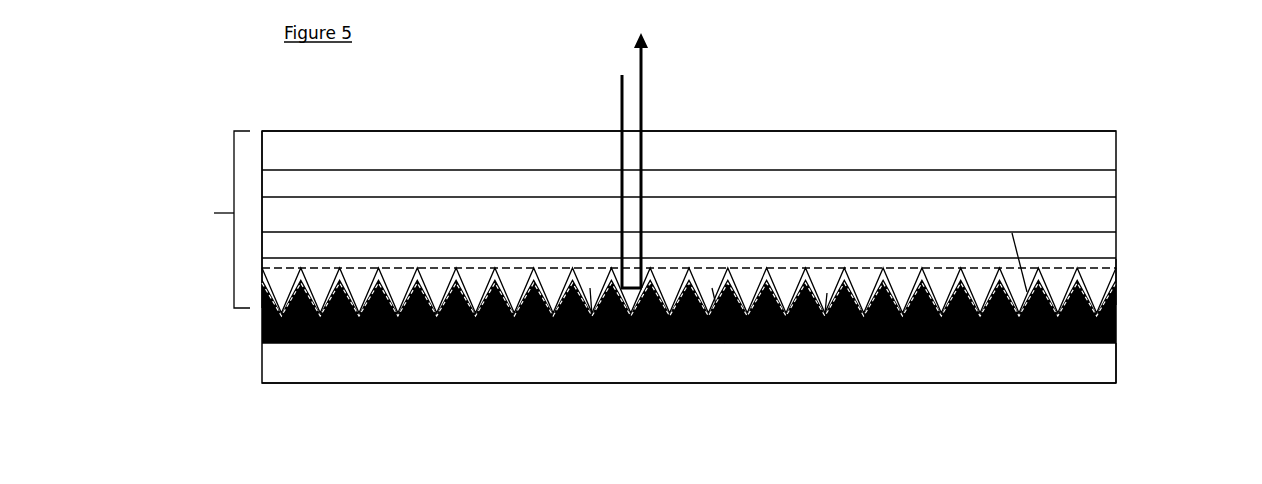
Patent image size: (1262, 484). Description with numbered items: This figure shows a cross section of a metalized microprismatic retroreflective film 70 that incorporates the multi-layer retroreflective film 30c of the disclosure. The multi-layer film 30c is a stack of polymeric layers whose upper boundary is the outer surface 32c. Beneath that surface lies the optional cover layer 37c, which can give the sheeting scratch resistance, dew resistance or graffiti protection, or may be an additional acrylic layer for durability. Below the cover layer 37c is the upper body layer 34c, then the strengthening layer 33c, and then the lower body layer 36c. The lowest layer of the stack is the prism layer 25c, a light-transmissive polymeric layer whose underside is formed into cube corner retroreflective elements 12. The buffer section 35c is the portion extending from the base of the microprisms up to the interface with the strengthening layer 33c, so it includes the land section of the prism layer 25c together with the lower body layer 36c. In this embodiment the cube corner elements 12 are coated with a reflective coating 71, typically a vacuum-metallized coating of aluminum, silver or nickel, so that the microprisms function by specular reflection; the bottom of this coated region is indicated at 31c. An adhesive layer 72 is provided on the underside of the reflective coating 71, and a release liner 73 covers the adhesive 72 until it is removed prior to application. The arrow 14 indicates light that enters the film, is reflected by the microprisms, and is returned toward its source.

The metalized microprismatic retroreflective film 70 is at (981, 84).
The multi-layer retroreflective film 30c is at (224, 219).
The top layer 32c is at (497, 131).
The cover layer 37c is at (1105, 140).
The upper body layer 34c is at (1105, 188).
The strengthening layer 33c is at (1098, 222).
The lower body layer 36c is at (1105, 238).
The buffer section 35c is at (1138, 250).
The prism layer 25c is at (1197, 282).
The cube corner retroreflective elements 12 is at (822, 343).
The reflective coating 71 is at (263, 322).
The adhesive layer 72 is at (368, 344).
The release liner 73 is at (472, 368).
The bottom layer 31c is at (1055, 343).
The arrow 14 is at (645, 92).